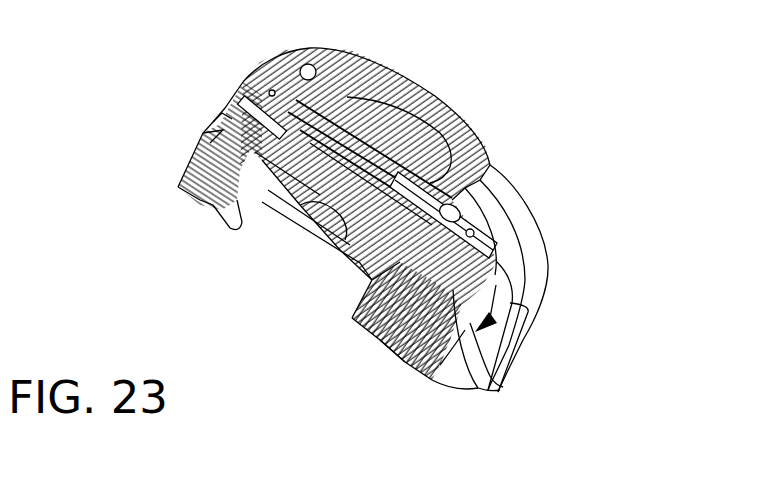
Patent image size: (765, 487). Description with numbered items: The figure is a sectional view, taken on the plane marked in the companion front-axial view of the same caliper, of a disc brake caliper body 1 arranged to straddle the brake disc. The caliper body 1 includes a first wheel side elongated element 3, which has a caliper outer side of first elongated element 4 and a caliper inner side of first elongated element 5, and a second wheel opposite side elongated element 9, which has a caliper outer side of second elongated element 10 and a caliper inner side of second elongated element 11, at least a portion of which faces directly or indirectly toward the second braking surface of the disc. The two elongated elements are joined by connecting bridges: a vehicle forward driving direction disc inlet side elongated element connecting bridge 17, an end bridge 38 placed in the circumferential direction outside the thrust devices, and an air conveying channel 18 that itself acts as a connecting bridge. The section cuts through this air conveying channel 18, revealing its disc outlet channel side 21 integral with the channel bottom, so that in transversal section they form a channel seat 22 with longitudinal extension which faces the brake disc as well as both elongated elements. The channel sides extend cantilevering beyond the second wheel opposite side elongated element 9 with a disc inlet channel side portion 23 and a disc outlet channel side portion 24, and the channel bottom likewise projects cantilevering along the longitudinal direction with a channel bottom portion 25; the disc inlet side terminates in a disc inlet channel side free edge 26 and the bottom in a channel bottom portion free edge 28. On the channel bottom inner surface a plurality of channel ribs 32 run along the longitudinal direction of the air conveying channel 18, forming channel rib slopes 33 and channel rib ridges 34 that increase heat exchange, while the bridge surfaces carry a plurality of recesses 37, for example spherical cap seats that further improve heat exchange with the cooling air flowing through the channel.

The disc brake caliper body 1 is at (612, 135).
The first wheel side elongated element 3 is at (298, 214).
The caliper outer side of first elongated element 4 is at (161, 138).
The caliper inner side of first elongated element 5 is at (253, 210).
The second wheel opposite side elongated element 9 is at (382, 371).
The caliper outer side of second elongated element 10 is at (488, 371).
The caliper inner side of second elongated element 11 is at (377, 321).
The disc inlet side elongated element connecting bridge 17 is at (444, 128).
The air conveying channel 18 is at (370, 105).
The disc outlet channel side 21 is at (432, 377).
The channel seat 22 is at (531, 347).
The disc inlet channel side portion 23 is at (546, 278).
The disc outlet channel side portion 24 is at (524, 375).
The channel bottom portion 25 is at (552, 285).
The disc inlet channel side free edge 26 is at (562, 238).
The channel bottom portion free edge 28 is at (561, 326).
The channel ribs 32 is at (487, 215).
The channel rib slopes 33 is at (472, 183).
The channel rib ridges 34 is at (517, 215).
The recesses 37 is at (400, 130).
The end bridge 38 is at (307, 250).